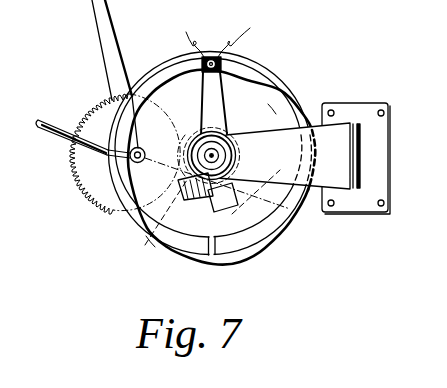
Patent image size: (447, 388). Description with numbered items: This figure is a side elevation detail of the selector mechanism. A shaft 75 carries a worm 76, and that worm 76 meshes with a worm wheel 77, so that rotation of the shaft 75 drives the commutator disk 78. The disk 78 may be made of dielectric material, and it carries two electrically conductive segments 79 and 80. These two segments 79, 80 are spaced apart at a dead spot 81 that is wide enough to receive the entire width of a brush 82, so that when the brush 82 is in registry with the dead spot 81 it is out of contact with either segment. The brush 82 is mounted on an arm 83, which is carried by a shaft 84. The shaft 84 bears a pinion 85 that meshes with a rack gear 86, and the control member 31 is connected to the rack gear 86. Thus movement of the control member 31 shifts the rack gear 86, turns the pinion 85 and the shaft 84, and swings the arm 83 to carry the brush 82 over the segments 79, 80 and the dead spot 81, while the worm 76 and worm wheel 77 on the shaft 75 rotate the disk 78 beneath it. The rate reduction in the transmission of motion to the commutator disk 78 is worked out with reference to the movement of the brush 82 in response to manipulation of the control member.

The control member 31 is at (112, 50).
The shaft 75 is at (47, 122).
The worm 76 is at (150, 240).
The worm wheel 77 is at (288, 229).
The commutator disk 78 is at (265, 97).
The electrically conductive segment 79 is at (145, 222).
The electrically conductive segment 80 is at (252, 248).
The dead spot 81 is at (210, 53).
The brush 82 is at (217, 103).
The arm 83 is at (273, 110).
The shaft 84 is at (214, 156).
The pinion 85 is at (195, 120).
The rack gear 86 is at (100, 183).